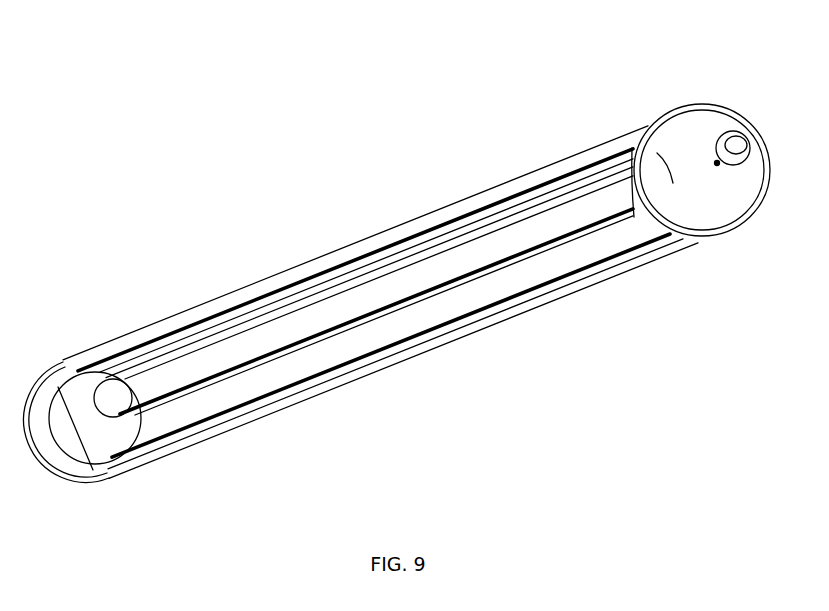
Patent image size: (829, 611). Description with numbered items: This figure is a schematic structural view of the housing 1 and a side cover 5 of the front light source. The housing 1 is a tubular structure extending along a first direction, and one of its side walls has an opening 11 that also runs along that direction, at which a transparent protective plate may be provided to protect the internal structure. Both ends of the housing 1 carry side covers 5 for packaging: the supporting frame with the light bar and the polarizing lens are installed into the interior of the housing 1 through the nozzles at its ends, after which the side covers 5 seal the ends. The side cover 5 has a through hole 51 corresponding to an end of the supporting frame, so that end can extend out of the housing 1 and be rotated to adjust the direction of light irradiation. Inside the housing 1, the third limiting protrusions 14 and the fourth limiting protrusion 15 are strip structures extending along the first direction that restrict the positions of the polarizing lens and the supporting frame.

The housing 1 is at (219, 298).
The opening 11 is at (56, 366).
The third limiting protrusion 14 is at (360, 270).
The fourth limiting protrusion 15 is at (477, 240).
The side cover 5 is at (650, 140).
The through hole 51 is at (727, 147).